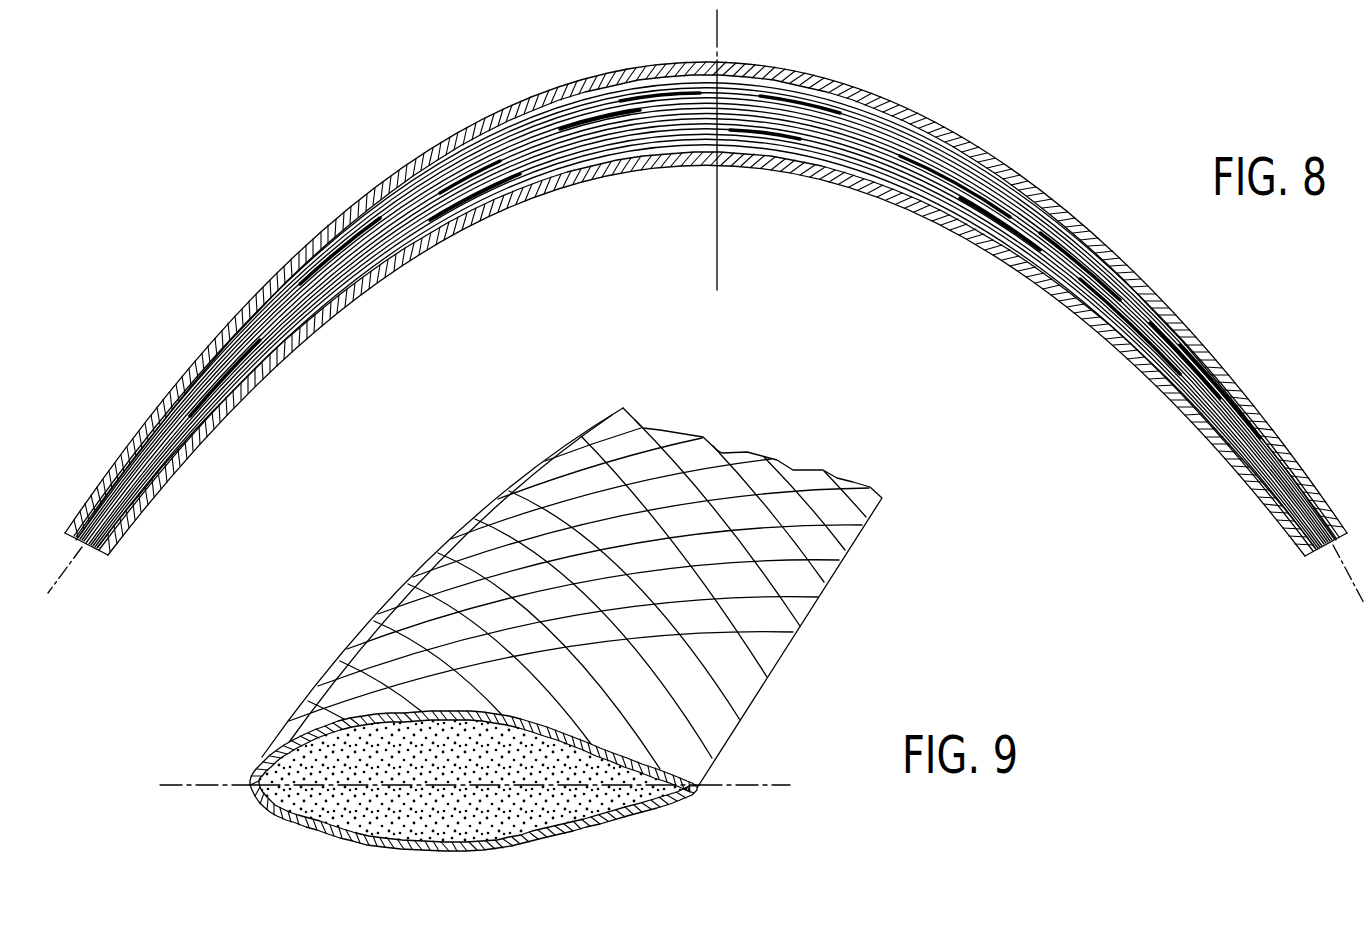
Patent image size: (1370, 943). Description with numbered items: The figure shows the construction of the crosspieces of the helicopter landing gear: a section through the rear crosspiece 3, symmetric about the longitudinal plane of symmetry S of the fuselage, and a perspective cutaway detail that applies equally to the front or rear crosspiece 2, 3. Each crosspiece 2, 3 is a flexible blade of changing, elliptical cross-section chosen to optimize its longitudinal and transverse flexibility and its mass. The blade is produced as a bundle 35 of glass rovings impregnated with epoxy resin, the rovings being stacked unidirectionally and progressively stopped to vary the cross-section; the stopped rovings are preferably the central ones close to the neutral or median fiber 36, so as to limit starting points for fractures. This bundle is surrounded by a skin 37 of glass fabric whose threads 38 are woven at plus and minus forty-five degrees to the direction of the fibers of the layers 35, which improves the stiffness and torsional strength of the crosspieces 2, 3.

In FIG. 8, the front crosspiece 2 is at (706, 333).
In FIG. 9, the front crosspiece 2 is at (600, 637).
In FIG. 8, the rear crosspiece 3 is at (706, 333).
In FIG. 9, the rear crosspiece 3 is at (600, 637).
In FIG. 8, the bundle of glass rovings 35 is at (1230, 372).
In FIG. 9, the bundle of glass rovings 35 is at (570, 805).
In FIG. 8, the neutral or median fiber 36 is at (1137, 323).
In FIG. 8, the skin of glass fabric 37 is at (337, 227).
In FIG. 9, the skin of glass fabric 37 is at (433, 628).
In FIG. 9, the threads 38 is at (752, 507).
In FIG. 8, the longitudinal plane of symmetry S is at (712, 40).